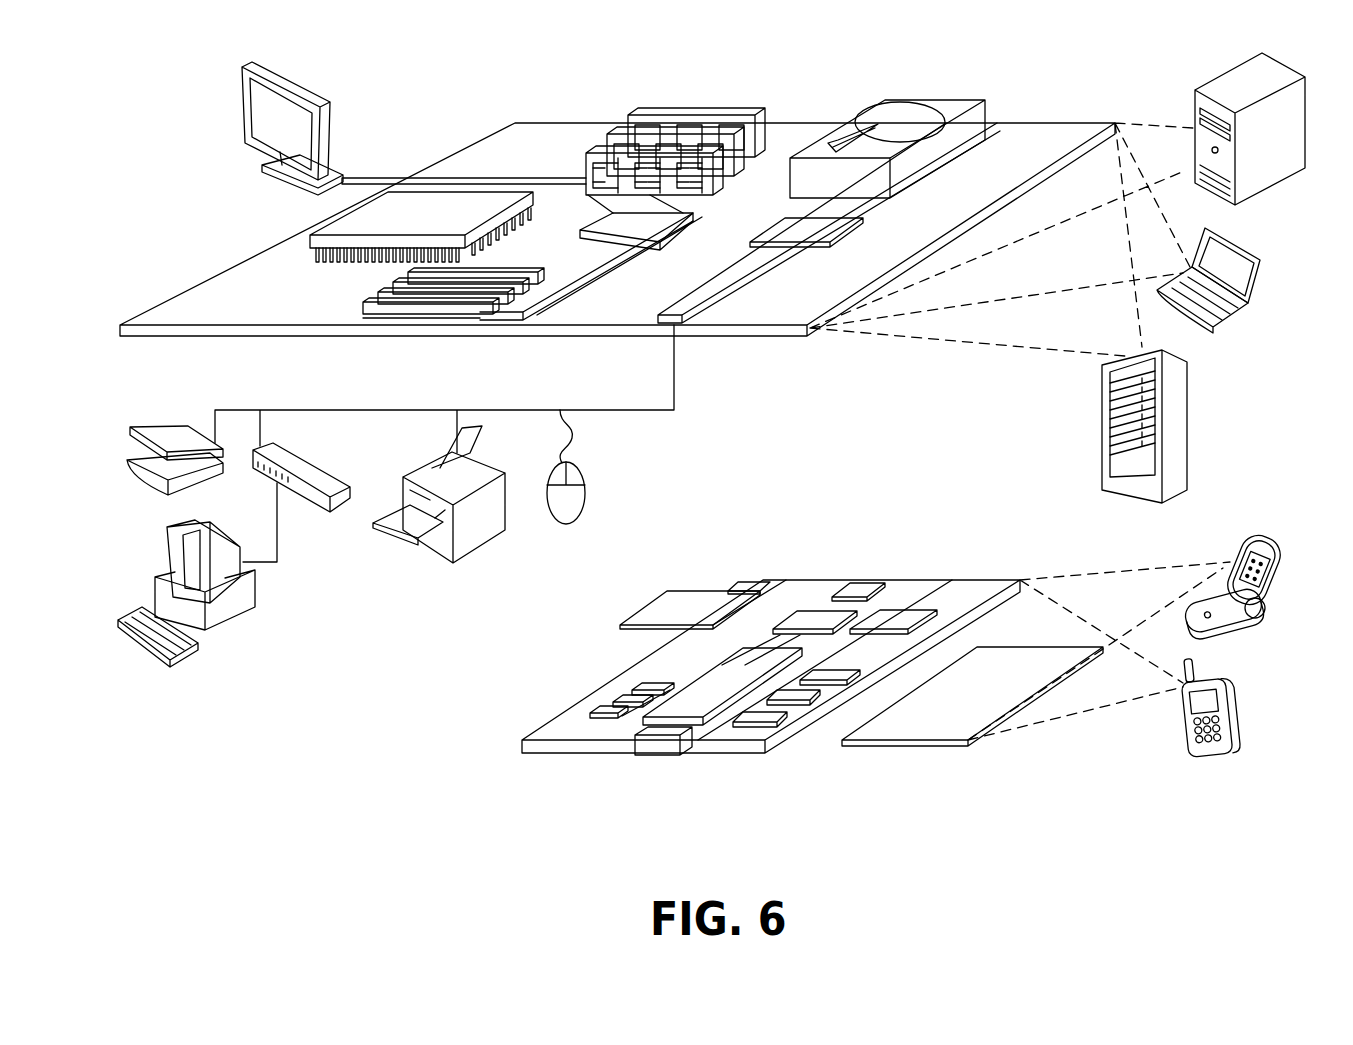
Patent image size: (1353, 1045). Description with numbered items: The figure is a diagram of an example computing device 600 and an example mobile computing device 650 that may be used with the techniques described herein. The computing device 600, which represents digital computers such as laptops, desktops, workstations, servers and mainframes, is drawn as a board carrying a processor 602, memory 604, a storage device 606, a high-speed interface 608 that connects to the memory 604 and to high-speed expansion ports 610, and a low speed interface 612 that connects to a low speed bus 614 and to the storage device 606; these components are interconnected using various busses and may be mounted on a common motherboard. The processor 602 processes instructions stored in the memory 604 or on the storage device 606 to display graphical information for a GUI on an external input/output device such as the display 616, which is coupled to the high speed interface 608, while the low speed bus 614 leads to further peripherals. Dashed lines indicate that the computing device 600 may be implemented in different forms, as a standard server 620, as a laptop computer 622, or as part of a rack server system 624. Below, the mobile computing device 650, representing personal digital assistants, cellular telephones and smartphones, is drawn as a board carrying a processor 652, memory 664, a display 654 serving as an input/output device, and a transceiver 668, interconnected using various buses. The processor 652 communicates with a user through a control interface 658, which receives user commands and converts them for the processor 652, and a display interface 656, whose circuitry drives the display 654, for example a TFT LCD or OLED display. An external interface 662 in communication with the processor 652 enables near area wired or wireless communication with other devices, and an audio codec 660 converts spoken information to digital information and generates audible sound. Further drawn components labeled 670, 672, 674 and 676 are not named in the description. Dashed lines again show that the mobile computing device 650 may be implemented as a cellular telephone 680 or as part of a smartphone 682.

The computing device 600 is at (429, 86).
The processor 602 is at (312, 240).
The memory 604 is at (643, 115).
The storage device 606 is at (876, 104).
The high-speed interface 608 is at (613, 224).
The high-speed expansion ports 610 is at (380, 300).
The low speed interface 612 is at (784, 226).
The low speed bus 614 is at (686, 325).
The display 616 is at (246, 68).
The standard server 620 is at (1194, 106).
The laptop computer 622 is at (1262, 254).
The rack server system 624 is at (1102, 450).
The mobile computing device 650 is at (486, 757).
The processor 652 is at (697, 715).
The display 654 is at (938, 728).
The display interface 656 is at (772, 728).
The control interface 658 is at (822, 707).
The audio codec 660 is at (822, 684).
The external interface 662 is at (662, 745).
The memory 664 is at (625, 700).
The transceiver 668 is at (890, 618).
The component 670 is at (863, 595).
The connector 672 is at (732, 598).
The component 674 is at (664, 598).
The component 676 is at (812, 618).
The cellular telephone 680 is at (1248, 508).
The smartphone 682 is at (1183, 717).